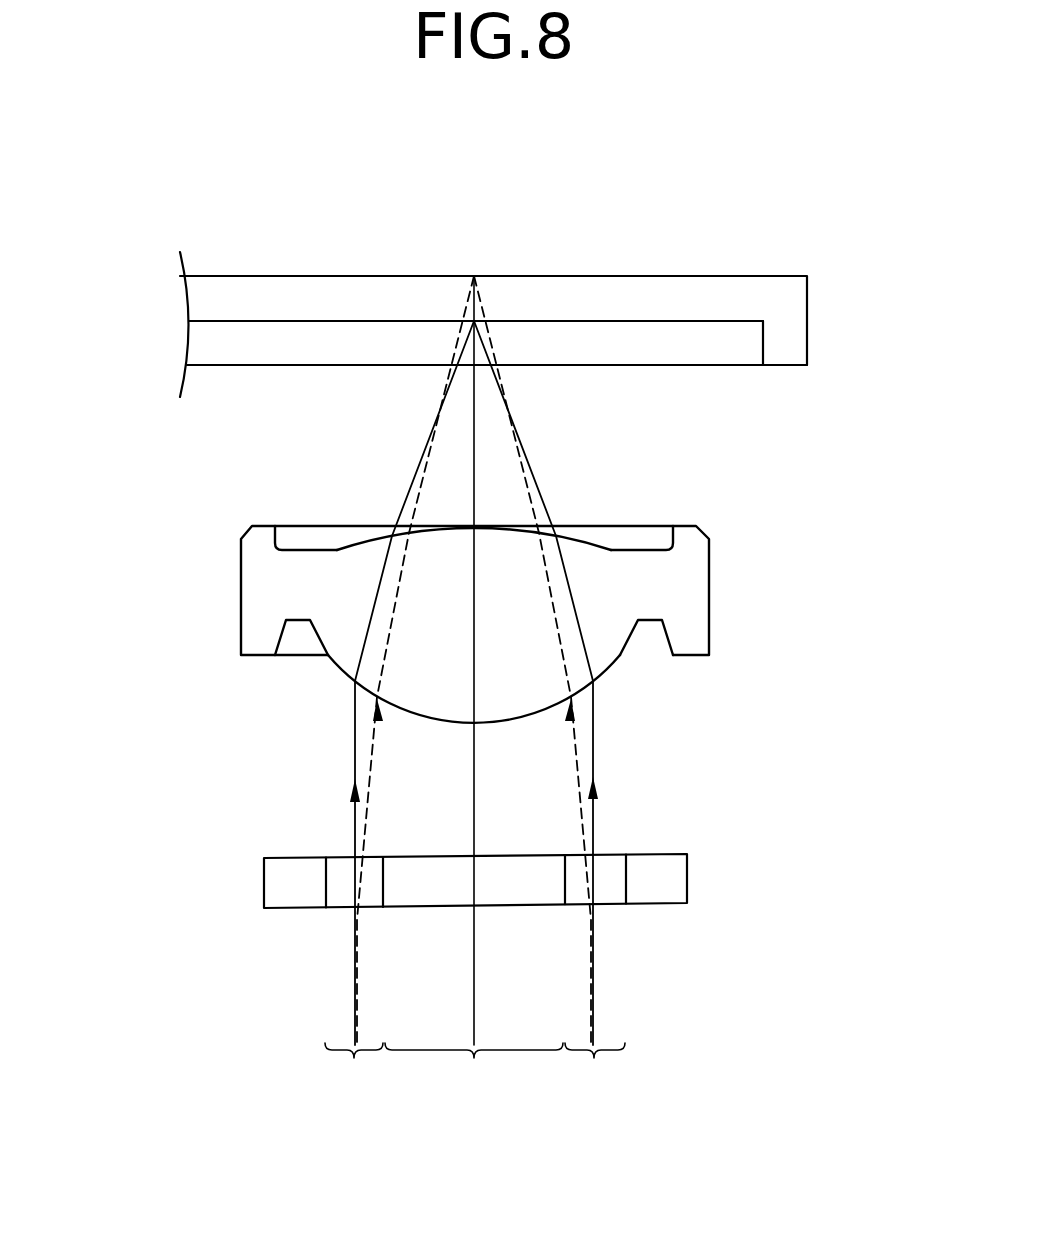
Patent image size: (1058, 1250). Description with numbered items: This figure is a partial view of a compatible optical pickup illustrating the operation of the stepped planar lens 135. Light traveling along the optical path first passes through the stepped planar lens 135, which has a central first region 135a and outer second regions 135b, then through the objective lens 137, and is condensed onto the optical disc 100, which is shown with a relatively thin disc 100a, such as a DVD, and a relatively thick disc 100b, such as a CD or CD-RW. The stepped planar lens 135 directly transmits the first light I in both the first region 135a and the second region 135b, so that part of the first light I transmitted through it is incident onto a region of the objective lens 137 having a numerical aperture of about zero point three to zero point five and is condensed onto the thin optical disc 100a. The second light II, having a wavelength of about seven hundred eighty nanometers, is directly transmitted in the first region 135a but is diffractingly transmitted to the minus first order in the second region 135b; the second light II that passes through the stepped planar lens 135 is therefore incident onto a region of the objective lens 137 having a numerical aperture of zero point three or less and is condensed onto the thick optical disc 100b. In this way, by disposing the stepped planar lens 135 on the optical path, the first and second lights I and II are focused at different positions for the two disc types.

The optical disc 100 is at (550, 305).
The thin optical disc 100a is at (737, 347).
The thick optical disc 100b is at (627, 283).
The objective lens 137 is at (250, 596).
The stepped planar lens 135 is at (537, 977).
The first region 135a is at (474, 977).
The second region 135b is at (477, 977).
The first light I is at (595, 818).
The second light II is at (575, 738).